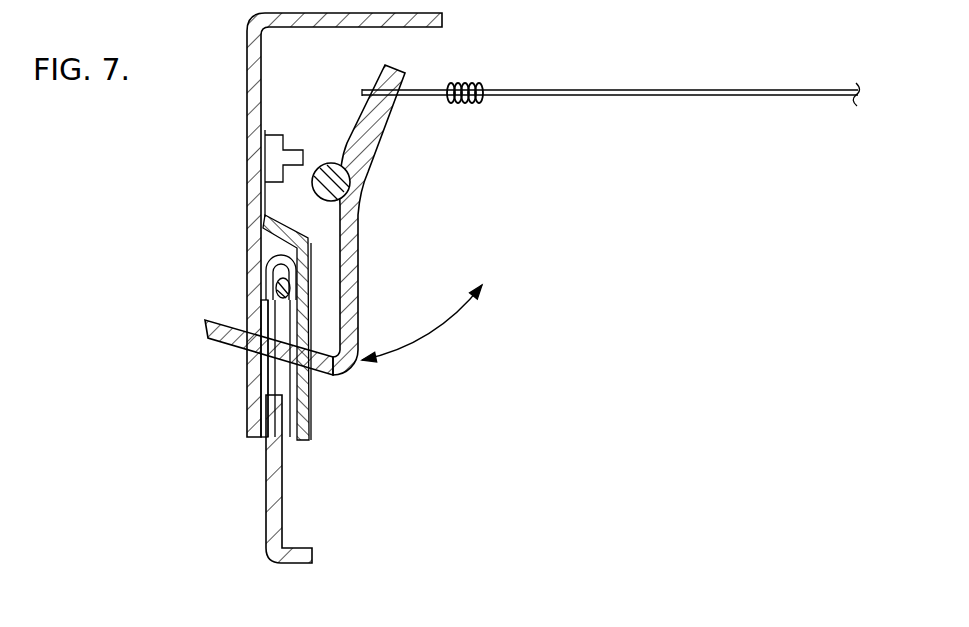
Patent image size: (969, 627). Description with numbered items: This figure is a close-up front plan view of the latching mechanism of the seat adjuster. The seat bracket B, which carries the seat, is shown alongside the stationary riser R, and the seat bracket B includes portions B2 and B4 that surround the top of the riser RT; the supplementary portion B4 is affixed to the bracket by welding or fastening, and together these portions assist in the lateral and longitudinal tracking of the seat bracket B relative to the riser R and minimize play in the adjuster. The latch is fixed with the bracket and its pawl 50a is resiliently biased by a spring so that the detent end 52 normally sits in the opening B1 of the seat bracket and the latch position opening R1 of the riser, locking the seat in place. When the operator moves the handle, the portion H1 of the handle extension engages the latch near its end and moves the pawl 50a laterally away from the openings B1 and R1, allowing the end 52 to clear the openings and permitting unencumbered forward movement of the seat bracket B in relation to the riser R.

The seat bracket B is at (250, 43).
The opening in seat bracket B1 is at (245, 373).
The seat bracket portion B2 is at (250, 282).
The supplementary portion of seat bracket B4 is at (340, 287).
The top of the riser RT is at (250, 262).
The riser R is at (273, 505).
The latch position opening in riser R1 is at (320, 382).
The portion of handle extension H1 is at (350, 190).
The pawl 50a is at (364, 242).
The detent 52 is at (213, 340).